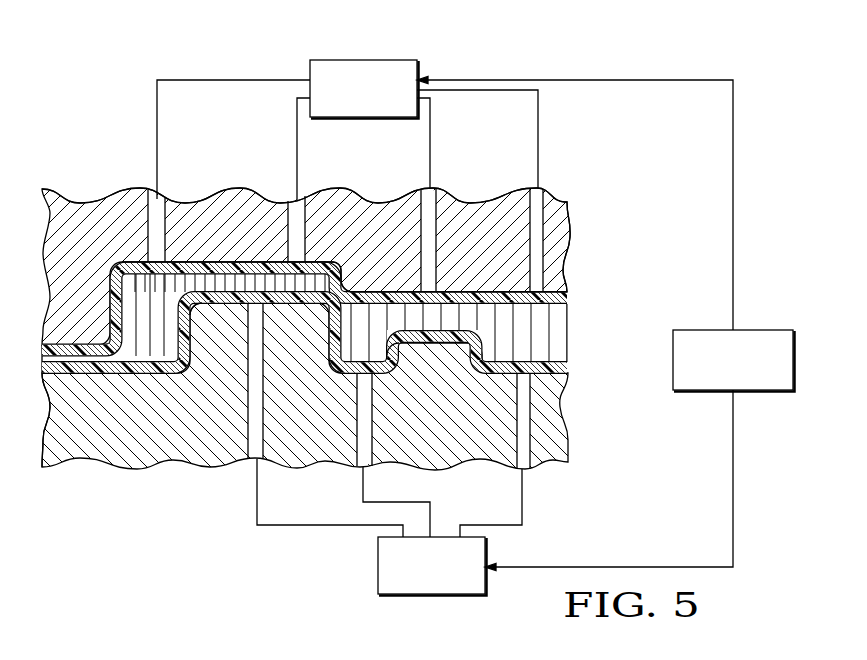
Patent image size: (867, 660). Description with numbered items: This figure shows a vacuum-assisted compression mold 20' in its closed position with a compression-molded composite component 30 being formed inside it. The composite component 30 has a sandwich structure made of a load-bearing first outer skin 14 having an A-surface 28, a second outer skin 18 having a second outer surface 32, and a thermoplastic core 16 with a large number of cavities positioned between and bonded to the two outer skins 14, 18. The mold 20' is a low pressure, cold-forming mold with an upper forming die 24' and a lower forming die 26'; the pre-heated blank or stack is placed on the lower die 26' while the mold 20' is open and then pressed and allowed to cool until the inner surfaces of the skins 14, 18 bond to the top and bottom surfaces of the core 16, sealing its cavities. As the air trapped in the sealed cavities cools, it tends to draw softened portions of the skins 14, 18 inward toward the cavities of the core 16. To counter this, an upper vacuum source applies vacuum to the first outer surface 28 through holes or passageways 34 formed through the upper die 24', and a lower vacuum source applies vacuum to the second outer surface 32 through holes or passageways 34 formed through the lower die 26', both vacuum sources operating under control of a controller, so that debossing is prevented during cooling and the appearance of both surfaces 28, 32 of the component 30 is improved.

The first outer skin 14 is at (573, 296).
The core 16 is at (573, 333).
The second outer skin 18 is at (573, 370).
The mold 20' is at (343, 284).
The upper forming die 24' is at (347, 266).
The lower forming die 26' is at (345, 396).
The A-surface 28 is at (507, 292).
The composite component 30 is at (627, 299).
The second outer surface 32 is at (200, 306).
The holes or passageways 34 is at (164, 238).